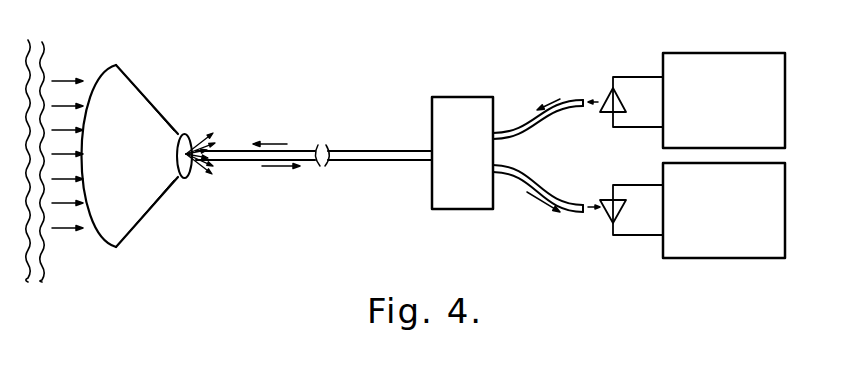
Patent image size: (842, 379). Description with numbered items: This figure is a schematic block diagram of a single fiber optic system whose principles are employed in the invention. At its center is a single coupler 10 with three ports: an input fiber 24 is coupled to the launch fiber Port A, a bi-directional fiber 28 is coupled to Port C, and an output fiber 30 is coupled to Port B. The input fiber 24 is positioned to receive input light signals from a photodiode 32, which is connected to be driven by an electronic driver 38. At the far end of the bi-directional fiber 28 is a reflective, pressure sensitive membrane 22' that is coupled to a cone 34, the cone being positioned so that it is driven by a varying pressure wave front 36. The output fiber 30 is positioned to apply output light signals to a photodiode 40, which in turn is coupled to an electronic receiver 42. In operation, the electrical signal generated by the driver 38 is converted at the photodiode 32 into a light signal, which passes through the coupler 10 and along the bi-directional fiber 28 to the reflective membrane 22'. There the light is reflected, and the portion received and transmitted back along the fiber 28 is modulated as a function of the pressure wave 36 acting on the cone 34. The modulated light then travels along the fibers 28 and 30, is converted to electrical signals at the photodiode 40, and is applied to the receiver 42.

The coupler 10 is at (470, 98).
The pressure sensitive reflective membrane 22' is at (204, 175).
The input fiber 24 is at (577, 99).
The bi-directional fiber 28 is at (362, 150).
The output fiber 30 is at (575, 215).
The photodiode 32 is at (616, 77).
The cone 34 is at (152, 100).
The pressure wave front 36 is at (44, 252).
The electronic driver 38 is at (737, 54).
The photodiode 40 is at (625, 236).
The electronic receiver 42 is at (738, 250).